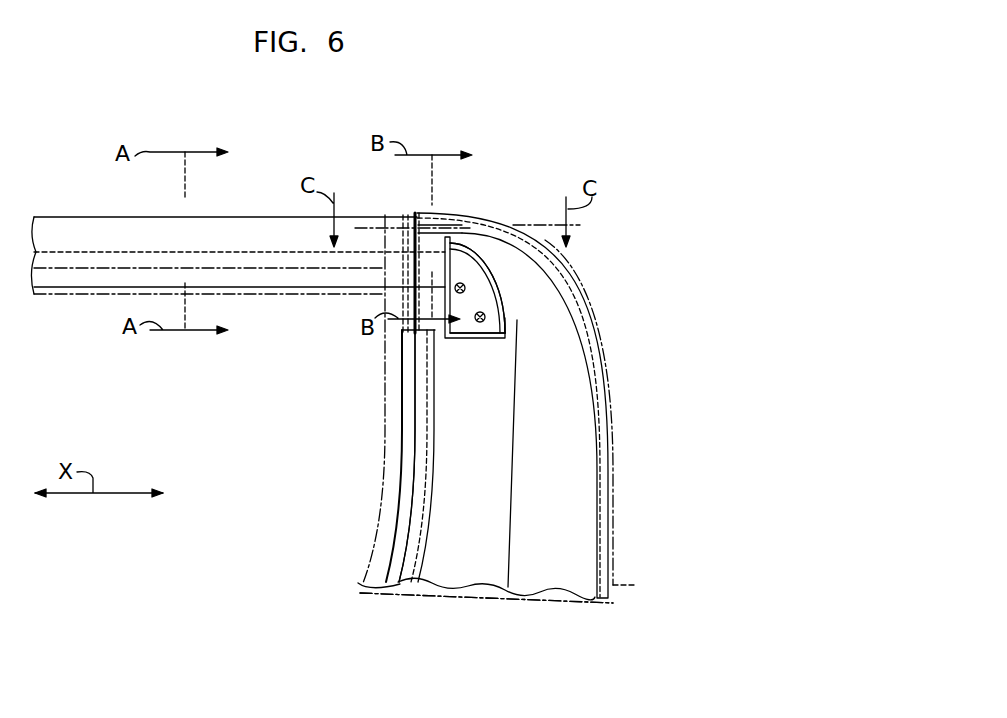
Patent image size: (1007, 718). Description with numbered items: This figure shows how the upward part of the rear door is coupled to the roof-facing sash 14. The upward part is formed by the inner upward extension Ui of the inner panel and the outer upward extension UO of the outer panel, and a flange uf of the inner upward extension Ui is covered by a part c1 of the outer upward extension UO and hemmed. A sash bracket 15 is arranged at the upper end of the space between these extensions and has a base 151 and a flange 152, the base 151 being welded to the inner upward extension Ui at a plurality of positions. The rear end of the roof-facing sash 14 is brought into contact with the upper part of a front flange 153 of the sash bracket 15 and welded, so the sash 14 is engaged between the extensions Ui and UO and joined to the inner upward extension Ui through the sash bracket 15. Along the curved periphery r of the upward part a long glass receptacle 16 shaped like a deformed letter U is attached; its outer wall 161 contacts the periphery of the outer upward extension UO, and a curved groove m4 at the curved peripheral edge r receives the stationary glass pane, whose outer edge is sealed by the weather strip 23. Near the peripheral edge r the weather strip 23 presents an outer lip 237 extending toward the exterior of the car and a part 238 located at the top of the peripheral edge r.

The roof-facing sash 14 is at (95, 210).
The sash bracket 15 is at (508, 303).
The glass receptacle 16 is at (437, 498).
The weather strip 23 is at (345, 568).
The base 151 is at (487, 323).
The flange 152 is at (512, 318).
The front flange 153 is at (460, 243).
The outer wall 161 is at (420, 456).
The outer lip 237 is at (385, 362).
The part at the top of the peripheral edge 238 is at (405, 185).
The flange of the inner upward extension uf is at (593, 373).
The inner upward extension Ui is at (477, 603).
The outer upward extension UO is at (548, 607).
The part of the outer upward extension c1 is at (637, 585).
The curved groove m4 is at (395, 432).
The curved periphery r is at (350, 543).